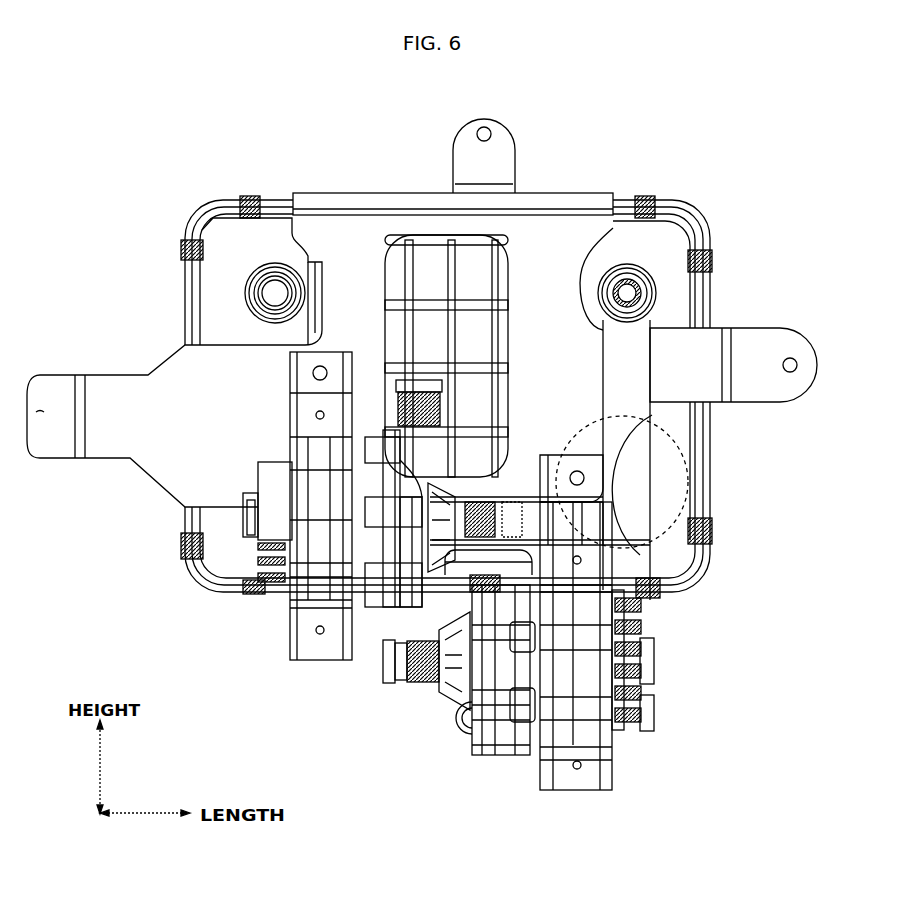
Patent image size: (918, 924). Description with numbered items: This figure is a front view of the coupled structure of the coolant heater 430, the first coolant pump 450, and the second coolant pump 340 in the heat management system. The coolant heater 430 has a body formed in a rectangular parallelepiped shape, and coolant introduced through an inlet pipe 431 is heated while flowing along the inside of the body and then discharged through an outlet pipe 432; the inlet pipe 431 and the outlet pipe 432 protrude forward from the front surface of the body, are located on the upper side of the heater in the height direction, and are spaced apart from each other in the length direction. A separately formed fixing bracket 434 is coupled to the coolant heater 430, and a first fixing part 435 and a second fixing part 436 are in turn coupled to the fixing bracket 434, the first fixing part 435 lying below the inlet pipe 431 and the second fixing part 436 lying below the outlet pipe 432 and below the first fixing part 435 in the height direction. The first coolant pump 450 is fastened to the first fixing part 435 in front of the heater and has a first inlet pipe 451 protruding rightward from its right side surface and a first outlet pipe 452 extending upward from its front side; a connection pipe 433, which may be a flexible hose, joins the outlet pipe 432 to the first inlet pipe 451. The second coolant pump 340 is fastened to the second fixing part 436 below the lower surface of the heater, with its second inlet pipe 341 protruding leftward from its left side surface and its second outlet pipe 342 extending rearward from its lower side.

The second coolant pump 340 is at (510, 766).
The second inlet pipe 341 is at (410, 684).
The second outlet pipe 342 is at (463, 740).
The coolant heater 430 is at (650, 200).
The inlet pipe 431 is at (262, 272).
The outlet pipe 432 is at (657, 268).
The connection pipe 433 is at (718, 410).
The fixing bracket 434 is at (345, 200).
The first fixing part 435 is at (305, 665).
The second fixing part 436 is at (615, 760).
The first coolant pump 450 is at (390, 607).
The first inlet pipe 451 is at (640, 470).
The first outlet pipe 452 is at (300, 322).